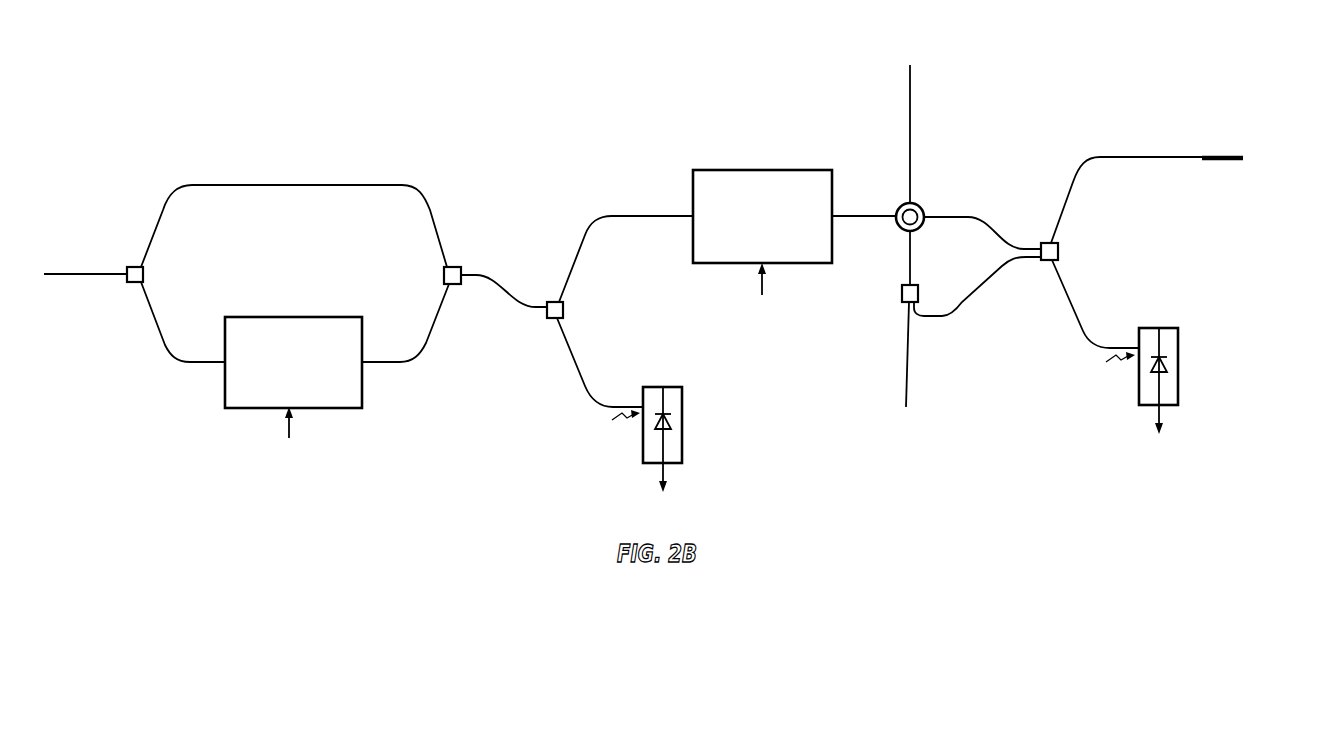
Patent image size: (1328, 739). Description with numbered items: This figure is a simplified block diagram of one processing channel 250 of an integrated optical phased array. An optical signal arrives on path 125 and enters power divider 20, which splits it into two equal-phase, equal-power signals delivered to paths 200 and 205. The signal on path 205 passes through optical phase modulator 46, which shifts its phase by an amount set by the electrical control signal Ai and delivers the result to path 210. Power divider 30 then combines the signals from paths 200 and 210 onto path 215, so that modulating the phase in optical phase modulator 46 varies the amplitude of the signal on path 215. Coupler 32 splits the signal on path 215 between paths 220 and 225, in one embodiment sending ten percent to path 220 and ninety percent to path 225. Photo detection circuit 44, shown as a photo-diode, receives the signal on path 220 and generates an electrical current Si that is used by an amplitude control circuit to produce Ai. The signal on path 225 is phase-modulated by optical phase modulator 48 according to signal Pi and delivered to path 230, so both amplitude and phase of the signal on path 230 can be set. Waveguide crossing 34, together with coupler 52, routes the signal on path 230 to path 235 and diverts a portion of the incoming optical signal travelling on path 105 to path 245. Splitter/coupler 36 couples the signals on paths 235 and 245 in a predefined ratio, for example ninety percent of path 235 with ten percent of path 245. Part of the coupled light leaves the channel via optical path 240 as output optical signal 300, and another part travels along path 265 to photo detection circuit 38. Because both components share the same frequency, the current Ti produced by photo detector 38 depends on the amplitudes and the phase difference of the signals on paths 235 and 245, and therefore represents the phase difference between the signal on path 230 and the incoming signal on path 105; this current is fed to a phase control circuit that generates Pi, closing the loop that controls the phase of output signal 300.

The path 125 is at (92, 273).
The power divider 20 is at (136, 284).
The path 200 is at (296, 185).
The path 205 is at (198, 363).
The optical phase modulator 46 is at (296, 317).
The path 210 is at (388, 363).
The power divider 30 is at (452, 285).
The path 215 is at (473, 273).
The coupler 32 is at (553, 302).
The path 225 is at (661, 215).
The path 220 is at (572, 368).
The photo detection circuit 44 is at (642, 428).
The optical phase modulator 48 is at (763, 170).
The path 230 is at (855, 218).
The waveguide crossing 34 is at (926, 209).
The incoming optical signal path 105 is at (909, 118).
The coupler 52 is at (918, 292).
The path 235 is at (968, 216).
The path 245 is at (930, 318).
The splitter/coupler 36 is at (1047, 243).
The optical path 240 is at (1148, 157).
The output optical signal 300 is at (1222, 155).
The path 265 is at (1068, 310).
The photo detection circuit 38 is at (1180, 366).
The processing channel 250 is at (1108, 42).